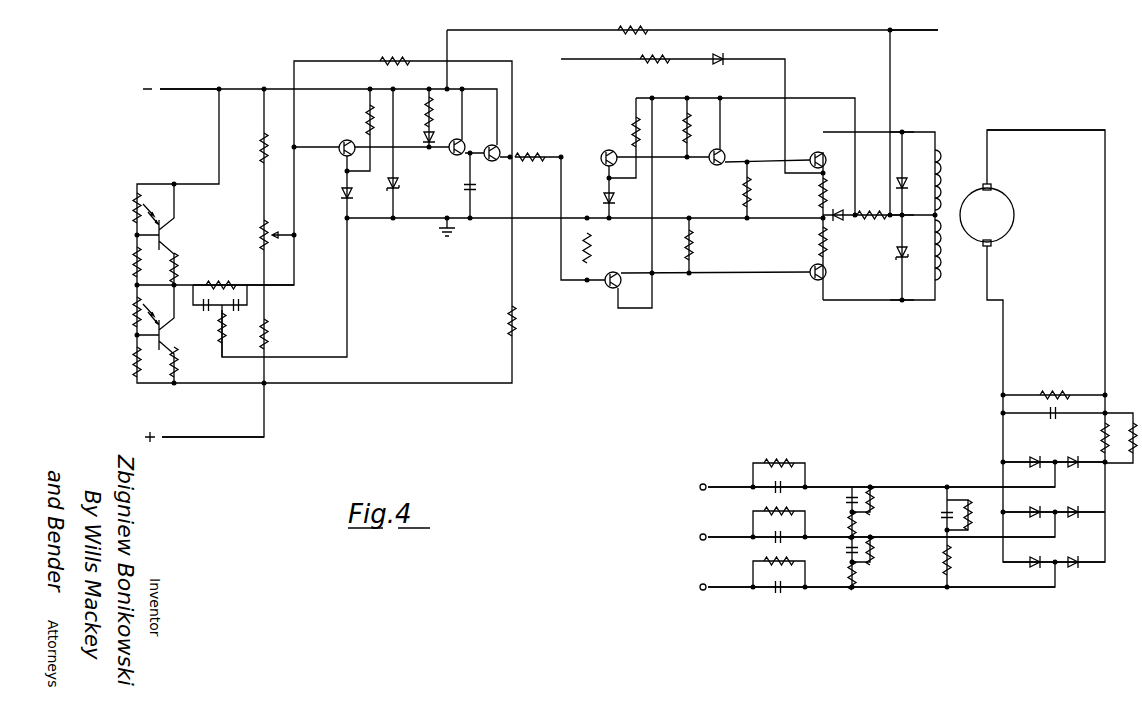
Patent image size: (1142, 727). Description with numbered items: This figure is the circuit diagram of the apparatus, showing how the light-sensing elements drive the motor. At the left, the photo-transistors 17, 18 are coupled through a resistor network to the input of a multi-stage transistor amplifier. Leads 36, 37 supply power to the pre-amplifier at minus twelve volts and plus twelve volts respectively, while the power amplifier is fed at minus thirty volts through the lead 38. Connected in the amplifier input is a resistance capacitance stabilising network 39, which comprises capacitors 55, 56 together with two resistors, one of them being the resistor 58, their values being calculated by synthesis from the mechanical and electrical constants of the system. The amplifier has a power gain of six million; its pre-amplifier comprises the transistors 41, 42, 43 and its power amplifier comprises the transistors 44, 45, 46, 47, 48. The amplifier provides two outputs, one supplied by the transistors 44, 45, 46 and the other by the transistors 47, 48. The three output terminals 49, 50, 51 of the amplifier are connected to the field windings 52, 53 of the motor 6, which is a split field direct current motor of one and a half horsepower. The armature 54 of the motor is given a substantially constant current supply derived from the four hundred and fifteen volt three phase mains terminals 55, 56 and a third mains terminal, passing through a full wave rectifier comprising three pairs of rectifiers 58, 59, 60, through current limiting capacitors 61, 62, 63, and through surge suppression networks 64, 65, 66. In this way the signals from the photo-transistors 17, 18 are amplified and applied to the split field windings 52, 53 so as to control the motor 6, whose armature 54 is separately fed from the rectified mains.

The motor 6 is at (979, 139).
The photo-transistor 17 is at (164, 236).
The photo-transistor 18 is at (184, 339).
The lead 36 is at (190, 86).
The lead 37 is at (228, 439).
The lead 38 is at (912, 31).
The resistance capacitance stabilising network 39 is at (252, 304).
The transistor 41 is at (347, 140).
The transistor 42 is at (462, 142).
The transistor 43 is at (500, 148).
The transistor 44 is at (610, 150).
The transistor 45 is at (725, 152).
The transistor 46 is at (815, 152).
The transistor 47 is at (616, 272).
The transistor 48 is at (812, 266).
The output terminal 49 is at (904, 130).
The output terminal 50 is at (900, 219).
The output terminal 51 is at (900, 302).
The field winding 52 is at (942, 152).
The field winding 53 is at (944, 262).
The armature 54 is at (1005, 222).
The mains terminal / capacitor 55 is at (207, 311).
The mains terminal / capacitor 56 is at (238, 311).
The pair of rectifiers / resistor 58 is at (228, 340).
The pair of rectifiers 59 is at (1040, 508).
The pair of rectifiers 60 is at (1040, 558).
The current limiting capacitor 61 is at (788, 484).
The current limiting capacitor 62 is at (788, 534).
The current limiting capacitor 63 is at (788, 584).
The surge suppression network 64 is at (855, 494).
The surge suppression network 65 is at (857, 545).
The surge suppression network 66 is at (955, 500).